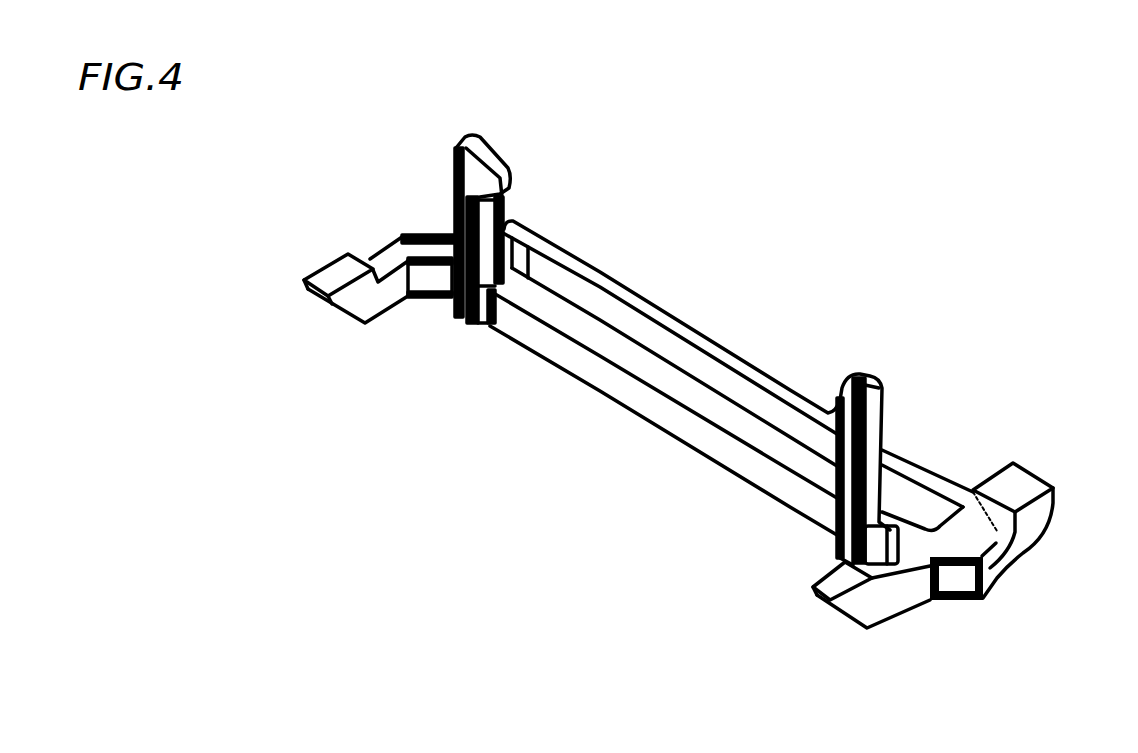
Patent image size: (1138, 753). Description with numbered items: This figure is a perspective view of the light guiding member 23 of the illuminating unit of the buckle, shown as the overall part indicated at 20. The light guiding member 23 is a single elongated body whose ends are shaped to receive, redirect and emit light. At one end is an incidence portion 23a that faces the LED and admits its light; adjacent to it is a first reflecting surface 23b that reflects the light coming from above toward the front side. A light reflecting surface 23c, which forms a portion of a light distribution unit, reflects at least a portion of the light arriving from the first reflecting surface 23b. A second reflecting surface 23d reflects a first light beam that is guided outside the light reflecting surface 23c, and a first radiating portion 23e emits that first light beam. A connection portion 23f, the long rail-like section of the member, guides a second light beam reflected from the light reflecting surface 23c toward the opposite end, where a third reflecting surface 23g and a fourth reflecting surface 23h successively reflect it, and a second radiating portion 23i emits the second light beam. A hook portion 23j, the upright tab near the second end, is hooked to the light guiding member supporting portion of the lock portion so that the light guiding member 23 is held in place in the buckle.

The connector assembly 20 is at (330, 101).
The light guiding member 23 is at (877, 291).
The incidence portion 23a is at (1018, 483).
The first reflecting surface 23b is at (1044, 538).
The light reflecting surface 23c is at (955, 583).
The second reflecting surface 23d is at (850, 626).
The first radiating portion 23e is at (840, 585).
The connection portion 23f is at (662, 415).
The third reflecting surface 23g is at (426, 232).
The fourth reflecting surface 23h is at (341, 313).
The second radiating portion 23i is at (327, 276).
The hook portion 23j is at (877, 470).